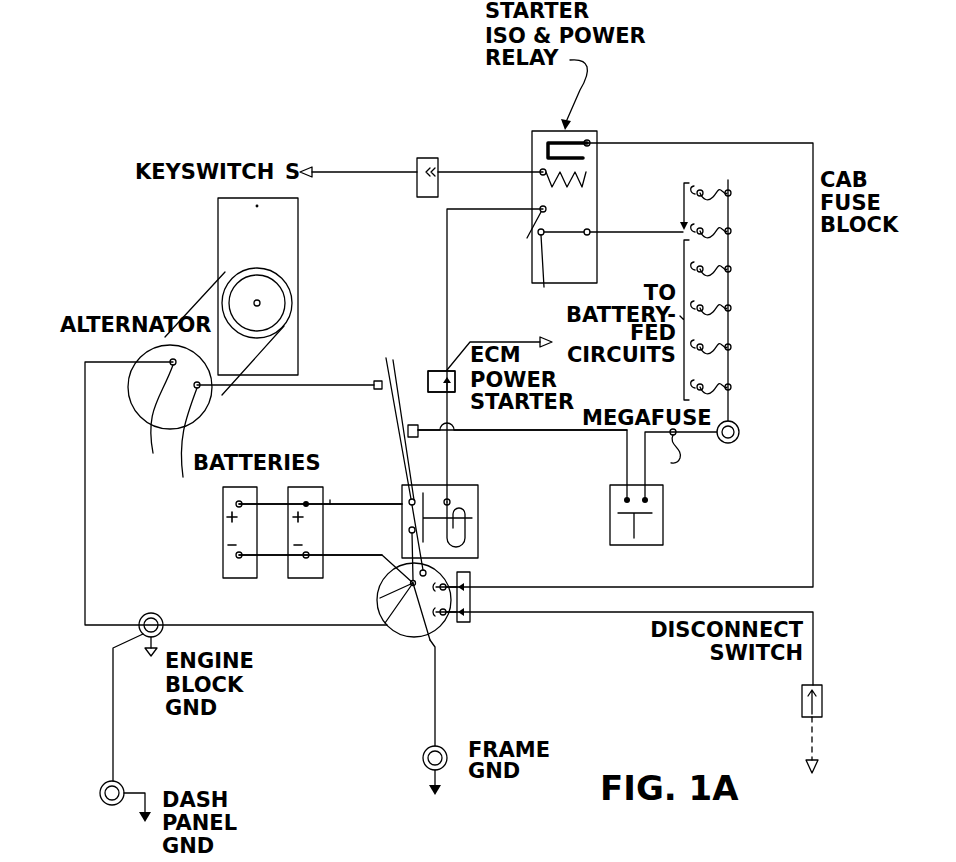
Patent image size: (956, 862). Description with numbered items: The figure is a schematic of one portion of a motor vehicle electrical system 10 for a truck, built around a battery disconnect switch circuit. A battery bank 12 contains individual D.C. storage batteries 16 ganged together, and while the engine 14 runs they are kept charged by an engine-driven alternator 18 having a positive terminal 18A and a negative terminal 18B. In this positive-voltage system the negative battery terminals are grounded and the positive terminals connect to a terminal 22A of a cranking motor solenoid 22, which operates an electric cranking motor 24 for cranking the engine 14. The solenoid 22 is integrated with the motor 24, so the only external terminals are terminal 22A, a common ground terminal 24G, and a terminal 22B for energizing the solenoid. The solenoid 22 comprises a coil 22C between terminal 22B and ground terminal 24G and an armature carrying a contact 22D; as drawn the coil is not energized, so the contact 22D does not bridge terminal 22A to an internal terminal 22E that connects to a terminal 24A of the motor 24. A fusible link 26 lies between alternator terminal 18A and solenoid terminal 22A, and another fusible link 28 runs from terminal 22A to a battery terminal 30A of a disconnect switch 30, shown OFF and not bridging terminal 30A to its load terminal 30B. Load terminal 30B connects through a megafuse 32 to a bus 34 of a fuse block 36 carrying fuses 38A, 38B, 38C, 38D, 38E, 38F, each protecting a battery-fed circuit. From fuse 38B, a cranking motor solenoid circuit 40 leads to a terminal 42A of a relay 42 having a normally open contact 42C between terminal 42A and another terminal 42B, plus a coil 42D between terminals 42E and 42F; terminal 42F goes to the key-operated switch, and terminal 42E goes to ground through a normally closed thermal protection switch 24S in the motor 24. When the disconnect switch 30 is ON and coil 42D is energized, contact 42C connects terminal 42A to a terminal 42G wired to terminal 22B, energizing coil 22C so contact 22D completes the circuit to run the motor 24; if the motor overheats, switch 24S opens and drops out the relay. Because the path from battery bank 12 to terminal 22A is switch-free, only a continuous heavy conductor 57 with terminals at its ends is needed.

The motor vehicle electrical system 10 is at (116, 195).
The battery bank 12 is at (252, 525).
The engine 14 is at (291, 296).
The storage batteries 16 is at (267, 542).
The alternator 18 is at (137, 382).
The alternator positive terminal 18A is at (157, 443).
The alternator negative terminal 18B is at (135, 420).
The cranking motor solenoid 22 is at (469, 462).
The solenoid battery terminal 22A is at (381, 431).
The solenoid energizing terminal 22B is at (492, 457).
The solenoid coil 22C is at (537, 530).
The solenoid contact 22D is at (522, 553).
The solenoid internal terminal 22E is at (371, 541).
The cranking motor 24 is at (388, 644).
The cranking motor terminal 24A is at (512, 586).
The common ground terminal 24G is at (348, 604).
The thermal protection switch 24S is at (498, 627).
The fusible link 26 is at (471, 413).
The fusible link 28 is at (420, 367).
The disconnect switch 30 is at (701, 583).
The disconnect switch battery terminal 30A is at (635, 537).
The disconnect switch load terminal 30B is at (697, 490).
The megafuse 32 is at (716, 449).
The bus 34 is at (767, 300).
The fuse block 36 is at (777, 282).
The fuse 38A is at (752, 171).
The fuse 38B is at (753, 211).
The fuse 38C is at (751, 245).
The fuse 38D is at (752, 321).
The fuse 38E is at (749, 363).
The fuse 38F is at (749, 398).
The cranking motor solenoid circuit 40 is at (671, 188).
The relay 42 is at (569, 199).
The relay terminal 42A is at (633, 213).
The relay terminal 42B is at (503, 281).
The relay contact 42C is at (601, 253).
The relay coil 42D is at (508, 116).
The relay coil terminal 42E is at (646, 123).
The relay coil terminal 42F is at (510, 150).
The relay terminal 42G is at (499, 235).
The continuous heavy conductor 57 is at (307, 463).